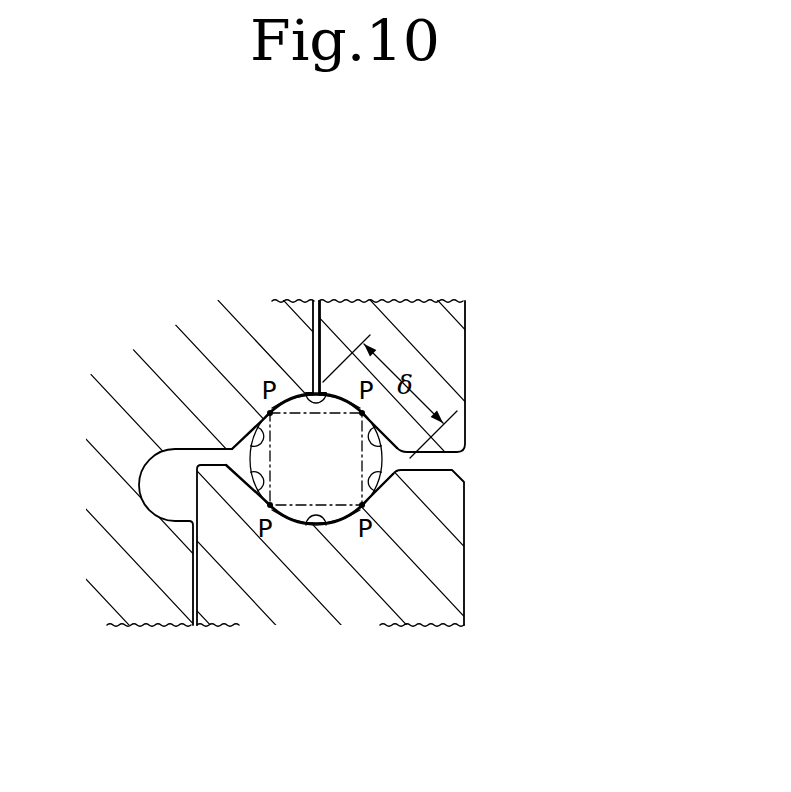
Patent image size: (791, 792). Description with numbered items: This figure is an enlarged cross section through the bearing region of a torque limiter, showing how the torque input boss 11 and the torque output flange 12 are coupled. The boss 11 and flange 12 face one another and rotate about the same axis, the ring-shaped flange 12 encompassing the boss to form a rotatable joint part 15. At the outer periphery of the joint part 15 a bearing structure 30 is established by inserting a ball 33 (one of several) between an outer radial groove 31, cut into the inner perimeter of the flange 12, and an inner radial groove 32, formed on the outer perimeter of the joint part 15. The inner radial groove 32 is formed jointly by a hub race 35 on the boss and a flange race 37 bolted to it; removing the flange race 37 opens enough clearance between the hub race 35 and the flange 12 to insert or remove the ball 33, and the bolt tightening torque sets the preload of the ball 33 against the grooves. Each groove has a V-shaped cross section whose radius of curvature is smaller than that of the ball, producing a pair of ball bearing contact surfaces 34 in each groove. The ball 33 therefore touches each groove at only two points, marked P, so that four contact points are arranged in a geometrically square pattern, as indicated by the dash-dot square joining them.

The boss 11 is at (130, 602).
The flange 12 is at (464, 601).
The joint part 15 is at (537, 391).
The bearing structure 30 is at (492, 455).
The outer radial groove 31 is at (309, 528).
The inner radial groove 32 is at (305, 392).
The ball 33 is at (352, 469).
The ball bearing contact surface 34 is at (257, 430).
The hub race 35 is at (323, 292).
The flange race 37 is at (405, 310).